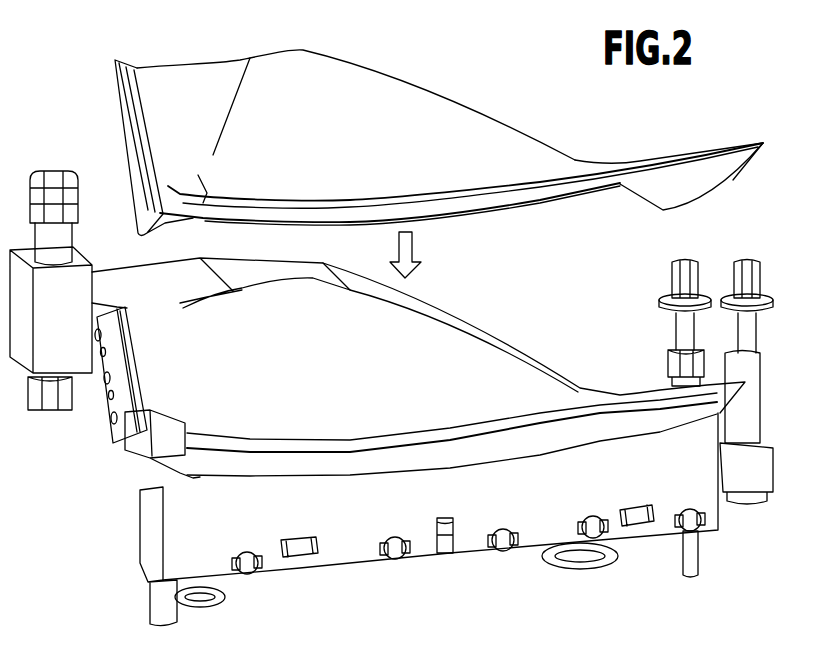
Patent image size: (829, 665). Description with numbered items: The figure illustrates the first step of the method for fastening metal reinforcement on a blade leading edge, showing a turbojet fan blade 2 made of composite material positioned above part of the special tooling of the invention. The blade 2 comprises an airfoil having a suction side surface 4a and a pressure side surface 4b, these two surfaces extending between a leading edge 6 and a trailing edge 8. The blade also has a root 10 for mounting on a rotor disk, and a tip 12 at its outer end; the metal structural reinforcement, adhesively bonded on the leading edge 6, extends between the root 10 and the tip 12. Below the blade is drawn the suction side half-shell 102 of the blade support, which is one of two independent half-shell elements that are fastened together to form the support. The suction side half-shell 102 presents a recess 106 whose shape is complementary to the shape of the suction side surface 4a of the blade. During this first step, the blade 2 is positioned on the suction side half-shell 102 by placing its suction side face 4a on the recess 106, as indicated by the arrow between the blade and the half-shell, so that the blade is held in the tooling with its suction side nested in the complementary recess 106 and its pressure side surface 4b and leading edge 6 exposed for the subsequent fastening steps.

The turbojet fan blade 2 is at (408, 131).
The suction side surface 4a is at (675, 185).
The pressure side surface 4b is at (485, 140).
The leading edge 6 is at (500, 208).
The trailing edge 8 is at (310, 50).
The root 10 is at (122, 101).
The tip 12 is at (731, 177).
The suction side half-shell 102 is at (130, 520).
The recess 106 is at (440, 340).